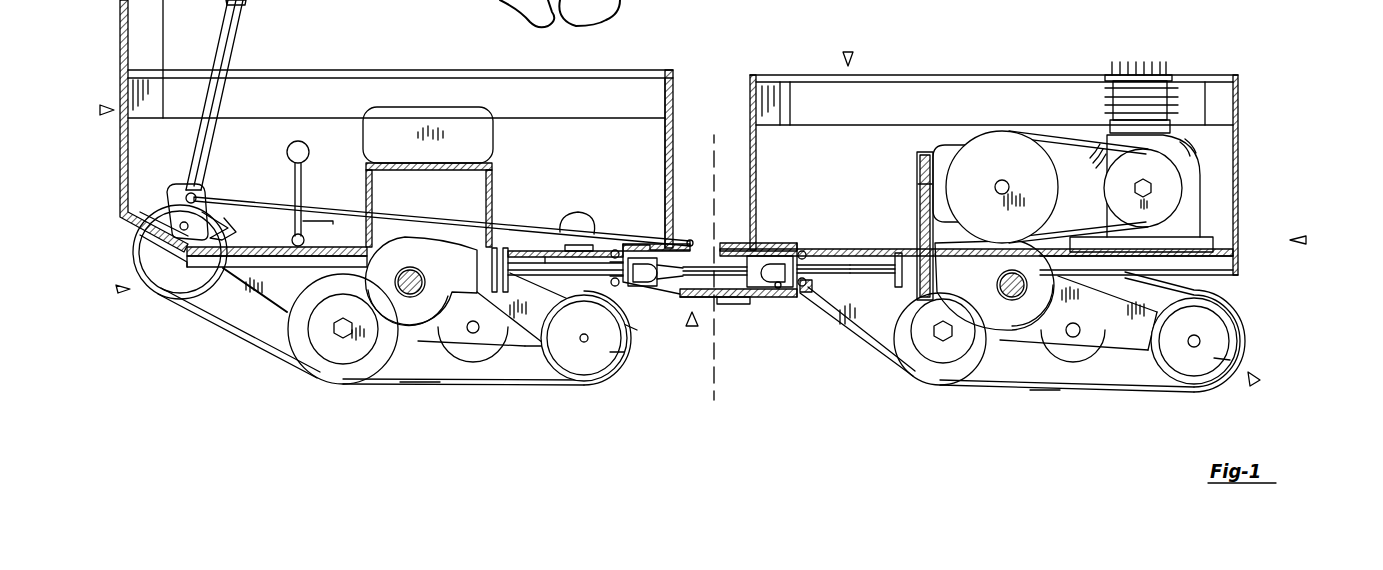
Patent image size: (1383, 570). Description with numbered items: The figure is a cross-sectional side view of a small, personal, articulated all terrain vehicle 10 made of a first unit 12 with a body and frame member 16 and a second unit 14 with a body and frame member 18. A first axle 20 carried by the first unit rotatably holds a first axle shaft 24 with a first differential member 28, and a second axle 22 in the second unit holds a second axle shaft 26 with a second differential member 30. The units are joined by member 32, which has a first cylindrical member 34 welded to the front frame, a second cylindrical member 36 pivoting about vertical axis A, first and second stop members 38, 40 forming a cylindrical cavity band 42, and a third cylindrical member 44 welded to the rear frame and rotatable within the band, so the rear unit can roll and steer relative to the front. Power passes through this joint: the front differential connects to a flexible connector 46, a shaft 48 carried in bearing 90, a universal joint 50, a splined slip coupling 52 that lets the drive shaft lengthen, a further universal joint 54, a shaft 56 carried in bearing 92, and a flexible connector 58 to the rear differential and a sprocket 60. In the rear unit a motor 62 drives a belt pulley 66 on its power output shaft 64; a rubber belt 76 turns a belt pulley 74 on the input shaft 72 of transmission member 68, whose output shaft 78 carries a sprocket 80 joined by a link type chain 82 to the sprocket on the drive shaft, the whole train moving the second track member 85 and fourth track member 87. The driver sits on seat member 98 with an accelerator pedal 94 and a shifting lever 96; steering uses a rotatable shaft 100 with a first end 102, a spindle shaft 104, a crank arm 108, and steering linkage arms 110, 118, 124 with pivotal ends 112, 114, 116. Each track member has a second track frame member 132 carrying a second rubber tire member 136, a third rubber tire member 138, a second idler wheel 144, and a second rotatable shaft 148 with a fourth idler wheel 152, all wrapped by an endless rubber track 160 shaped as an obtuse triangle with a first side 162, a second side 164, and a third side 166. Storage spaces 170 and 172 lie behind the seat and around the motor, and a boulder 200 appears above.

The all terrain vehicle 10 is at (1300, 240).
The first unit 12 is at (100, 110).
The second unit 14 is at (852, 55).
The body and frame member 16 is at (122, 148).
The body and frame member 18 is at (1238, 142).
The first axle 20 is at (410, 294).
The second axle 22 is at (1012, 293).
The first axle shaft 24 is at (438, 302).
The second axle shaft 26 is at (1020, 295).
The first differential member 28 is at (453, 323).
The second differential member 30 is at (993, 307).
The connecting member 32 is at (692, 322).
The first cylindrical member 34 is at (688, 296).
The second cylindrical member 36 is at (736, 300).
The first stop member 38 is at (734, 256).
The second stop member 40 is at (797, 258).
The cylindrical cavity band 42 is at (786, 255).
The third cylindrical member 44 is at (760, 254).
The flexible connector 46 is at (498, 248).
The shaft 48 is at (577, 277).
The universal joint 50 is at (642, 257).
The splined slip coupling 52 is at (696, 255).
The universal joint 54 is at (786, 288).
The shaft 56 is at (866, 270).
The flexible connector 58 is at (898, 253).
The sprocket 60 is at (887, 296).
The motor 62 is at (1203, 189).
The power output shaft 64 is at (1158, 189).
The belt pulley 66 is at (1172, 167).
The transmission member 68 is at (946, 146).
The input shaft 72 is at (1006, 181).
The belt pulley 74 is at (990, 132).
The belt 76 is at (1040, 128).
The output shaft 78 is at (932, 155).
The sprocket 80 is at (920, 168).
The link type chain 82 is at (920, 184).
The second track member 85 is at (118, 292).
The fourth track member 87 is at (1254, 382).
The bearing 90 is at (620, 292).
The bearing 92 is at (820, 296).
The accelerator pedal 94 is at (189, 209).
The shifting lever 96 is at (294, 198).
The seat member 98 is at (398, 110).
The rotatable shaft 100 is at (220, 99).
The first end 102 is at (240, 13).
The spindle shaft 104 is at (178, 230).
The crank arm 108 is at (178, 216).
The steering linkage arm 110 is at (330, 207).
The first end 112 is at (194, 196).
The second end 114 is at (578, 245).
The first end 116 is at (598, 244).
The steering linkage arm 118 is at (576, 242).
The steering linkage arm 124 is at (646, 244).
The second track frame member 132 is at (537, 338).
The second rubber tire member 136 is at (322, 366).
The third rubber tire member 138 is at (491, 372).
The second idler wheel 144 is at (175, 277).
The second rotatable shaft 148 is at (590, 344).
The fourth idler wheel 152 is at (624, 352).
The track 160 is at (246, 338).
The first side 162 is at (437, 388).
The second side 164 is at (191, 334).
The third side 166 is at (566, 262).
The storage space 170 is at (640, 134).
The storage space 172 is at (810, 95).
The boulder 200 is at (500, 6).